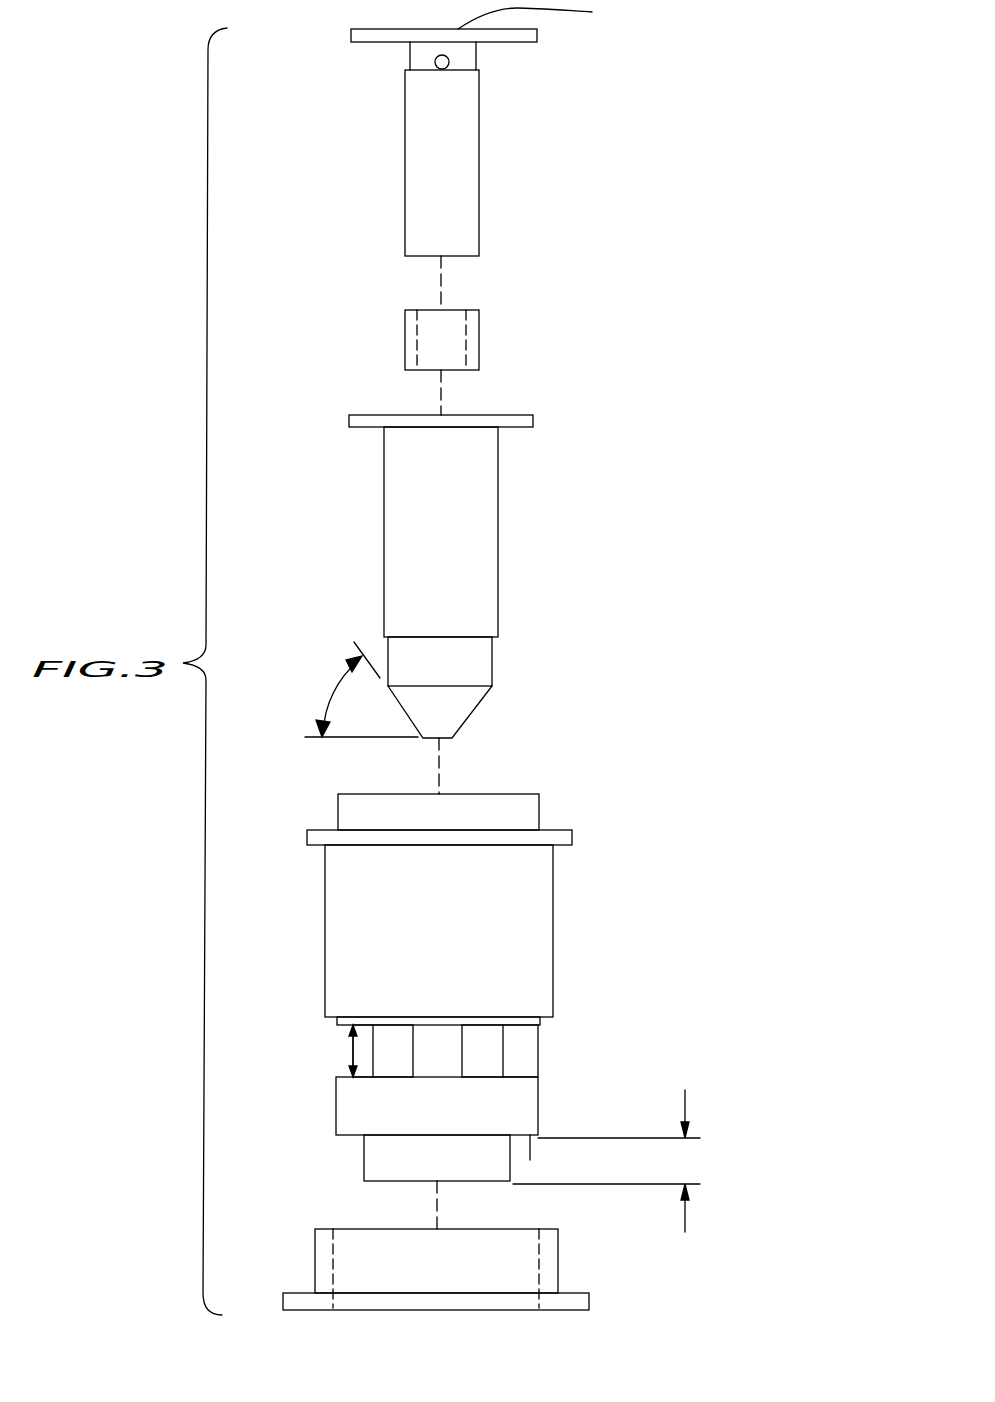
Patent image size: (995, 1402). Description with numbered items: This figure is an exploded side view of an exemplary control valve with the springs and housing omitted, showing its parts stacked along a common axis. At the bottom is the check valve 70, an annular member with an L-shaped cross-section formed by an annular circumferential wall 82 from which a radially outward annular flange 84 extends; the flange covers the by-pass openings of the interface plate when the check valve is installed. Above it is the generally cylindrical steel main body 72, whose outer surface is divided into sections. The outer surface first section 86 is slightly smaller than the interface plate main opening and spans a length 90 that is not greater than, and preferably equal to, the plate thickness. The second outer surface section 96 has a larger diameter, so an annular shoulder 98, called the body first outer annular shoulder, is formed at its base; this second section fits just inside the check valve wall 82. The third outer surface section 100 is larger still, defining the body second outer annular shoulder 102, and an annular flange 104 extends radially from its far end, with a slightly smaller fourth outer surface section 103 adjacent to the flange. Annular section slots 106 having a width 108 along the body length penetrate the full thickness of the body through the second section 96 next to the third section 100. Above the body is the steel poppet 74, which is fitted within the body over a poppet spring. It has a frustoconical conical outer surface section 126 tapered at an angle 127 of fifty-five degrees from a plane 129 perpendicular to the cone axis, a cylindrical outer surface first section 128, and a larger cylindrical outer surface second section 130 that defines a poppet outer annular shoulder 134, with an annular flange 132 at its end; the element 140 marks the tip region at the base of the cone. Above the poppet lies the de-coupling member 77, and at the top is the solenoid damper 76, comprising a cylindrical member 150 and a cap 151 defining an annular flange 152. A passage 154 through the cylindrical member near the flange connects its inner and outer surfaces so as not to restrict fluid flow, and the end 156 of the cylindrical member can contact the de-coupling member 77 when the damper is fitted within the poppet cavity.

The check valve 70 is at (707, 1235).
The main body 72 is at (500, 935).
The poppet 74 is at (480, 548).
The solenoid damper 76 is at (466, 183).
The de-coupling member 77 is at (479, 332).
The annular circumferential wall 82 is at (315, 1238).
The annular flange 84 is at (575, 1293).
The outer surface first section 86 is at (378, 1145).
The length 90 is at (606, 1161).
The second outer surface section 96 is at (538, 1108).
The annular shoulder 98 is at (530, 1160).
The third outer surface section 100 is at (553, 902).
The body second outer annular shoulder 102 is at (337, 1020).
The fourth outer surface section 103 is at (539, 810).
The annular flange 104 is at (572, 838).
The annular section slots 106 is at (345, 1040).
The width 108 is at (352, 1053).
The conical outer surface section 126 is at (474, 712).
The angle 127 is at (332, 697).
The cylindrical outer surface first section 128 is at (492, 662).
The plane 129 is at (370, 737).
The cylindrical outer surface second section 130 is at (498, 480).
The annular flange 132 is at (533, 421).
The poppet outer annular shoulder 134 is at (492, 642).
The tip base 140 is at (492, 686).
The cylindrical member 150 is at (479, 135).
The cap 151 is at (548, 14).
The annular flange 152 is at (537, 36).
The passage 154 is at (449, 62).
The end 156 is at (479, 256).